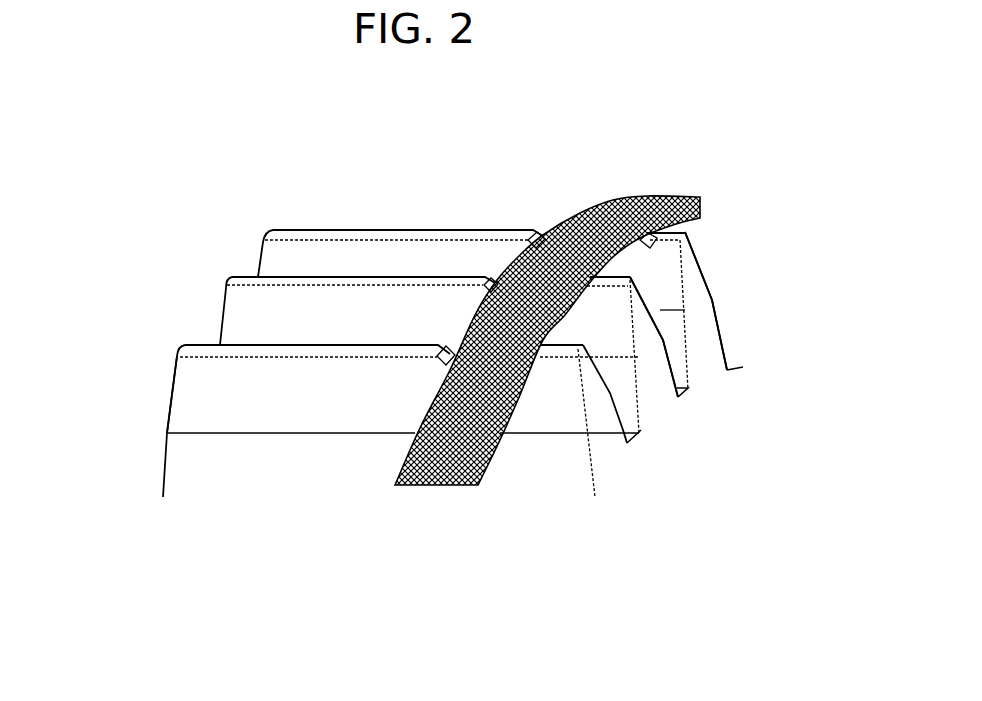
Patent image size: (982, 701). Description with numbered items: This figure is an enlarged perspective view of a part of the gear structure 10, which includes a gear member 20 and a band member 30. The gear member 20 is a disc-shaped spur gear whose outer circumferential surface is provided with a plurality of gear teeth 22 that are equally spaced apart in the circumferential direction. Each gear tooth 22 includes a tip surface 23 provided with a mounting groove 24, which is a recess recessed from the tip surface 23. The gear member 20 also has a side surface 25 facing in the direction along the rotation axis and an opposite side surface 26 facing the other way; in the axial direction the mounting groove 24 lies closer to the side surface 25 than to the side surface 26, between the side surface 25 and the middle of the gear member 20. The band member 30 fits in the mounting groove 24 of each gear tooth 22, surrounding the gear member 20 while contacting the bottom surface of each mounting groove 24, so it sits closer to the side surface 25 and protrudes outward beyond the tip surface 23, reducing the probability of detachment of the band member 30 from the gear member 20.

The gear structure 10 is at (275, 490).
The gear member 20 is at (677, 458).
The gear teeth 22 is at (173, 393).
The tip surface 23 is at (286, 237).
The mounting groove 24 is at (452, 345).
The side surface 25 is at (708, 395).
The side surface 26 is at (165, 472).
The band member 30 is at (620, 207).